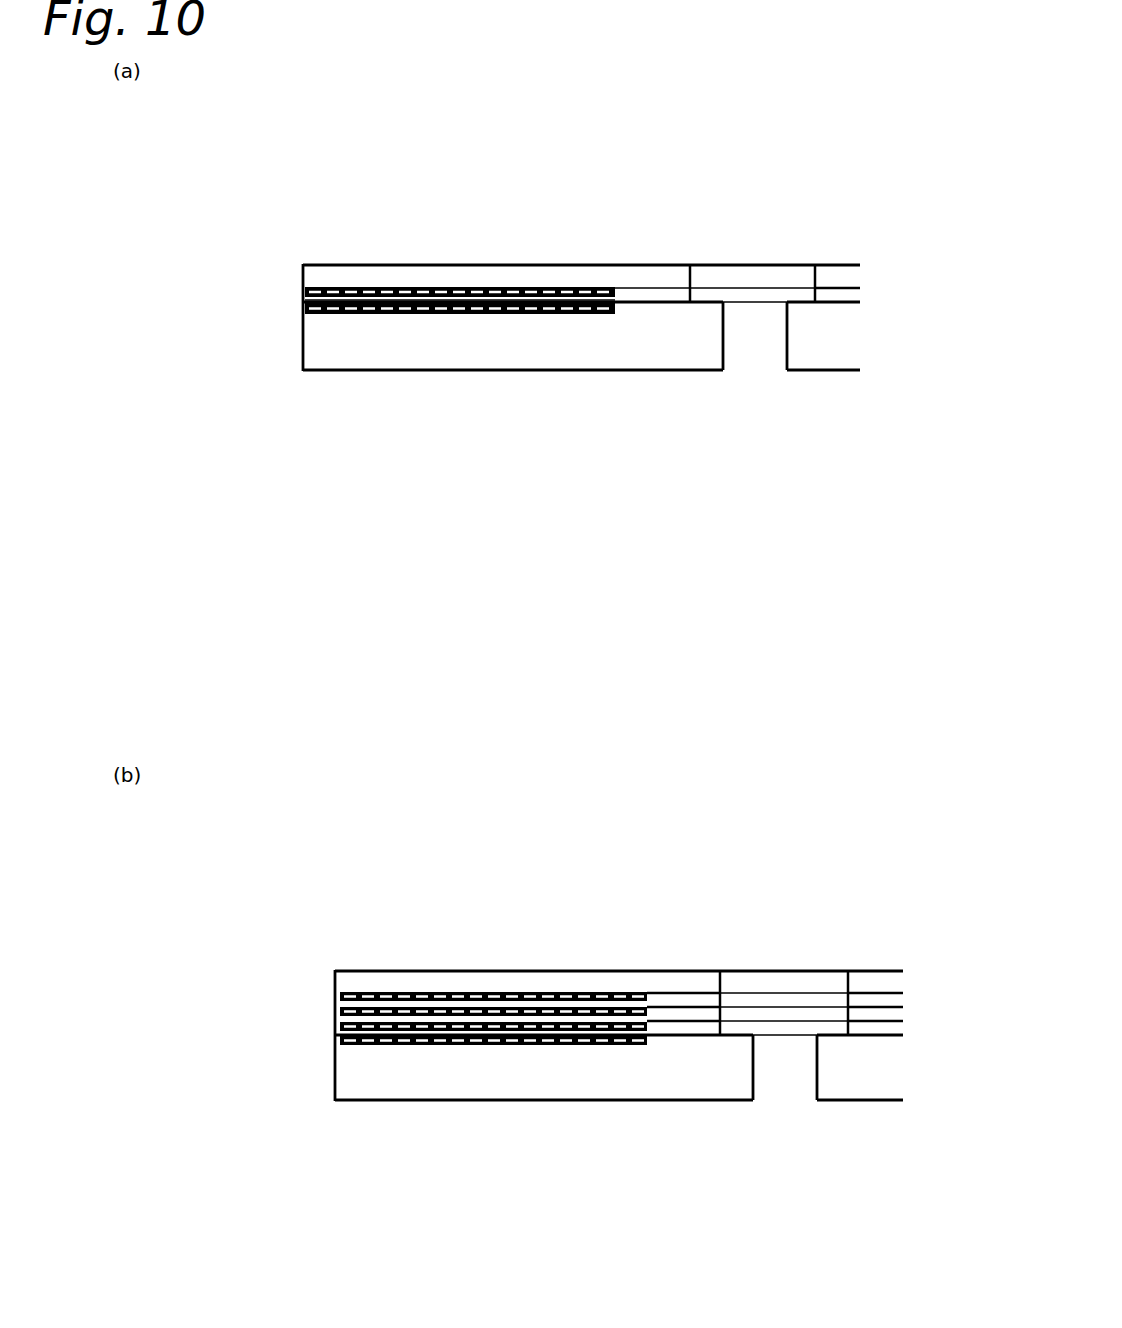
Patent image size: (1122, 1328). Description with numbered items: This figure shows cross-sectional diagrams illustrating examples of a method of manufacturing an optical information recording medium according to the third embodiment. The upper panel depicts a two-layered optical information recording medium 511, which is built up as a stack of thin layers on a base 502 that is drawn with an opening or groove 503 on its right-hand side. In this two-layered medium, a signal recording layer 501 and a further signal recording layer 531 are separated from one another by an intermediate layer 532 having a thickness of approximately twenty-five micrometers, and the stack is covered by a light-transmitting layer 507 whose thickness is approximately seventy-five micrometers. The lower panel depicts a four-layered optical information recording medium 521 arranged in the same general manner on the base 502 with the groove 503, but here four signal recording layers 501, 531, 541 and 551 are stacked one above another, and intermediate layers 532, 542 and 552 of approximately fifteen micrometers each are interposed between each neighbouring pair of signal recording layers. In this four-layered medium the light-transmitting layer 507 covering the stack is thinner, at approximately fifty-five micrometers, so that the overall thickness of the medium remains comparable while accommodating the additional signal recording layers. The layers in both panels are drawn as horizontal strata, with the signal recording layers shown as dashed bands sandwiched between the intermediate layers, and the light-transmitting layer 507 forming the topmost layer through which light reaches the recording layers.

The signal recording layer 501 is at (423, 313).
The substrate 502 is at (393, 348).
The groove 503 is at (755, 355).
The light-transmitting layer 507 is at (470, 266).
The two-layered optical information recording medium 511 is at (720, 248).
The four-layered optical information recording medium 521 is at (811, 951).
The signal recording layer 531 is at (477, 303).
The intermediate layer 532 is at (300, 305).
The signal recording layer 541 is at (558, 1017).
The intermediate layer 542 is at (340, 1013).
The signal recording layer 551 is at (610, 992).
The intermediate layer 552 is at (340, 997).